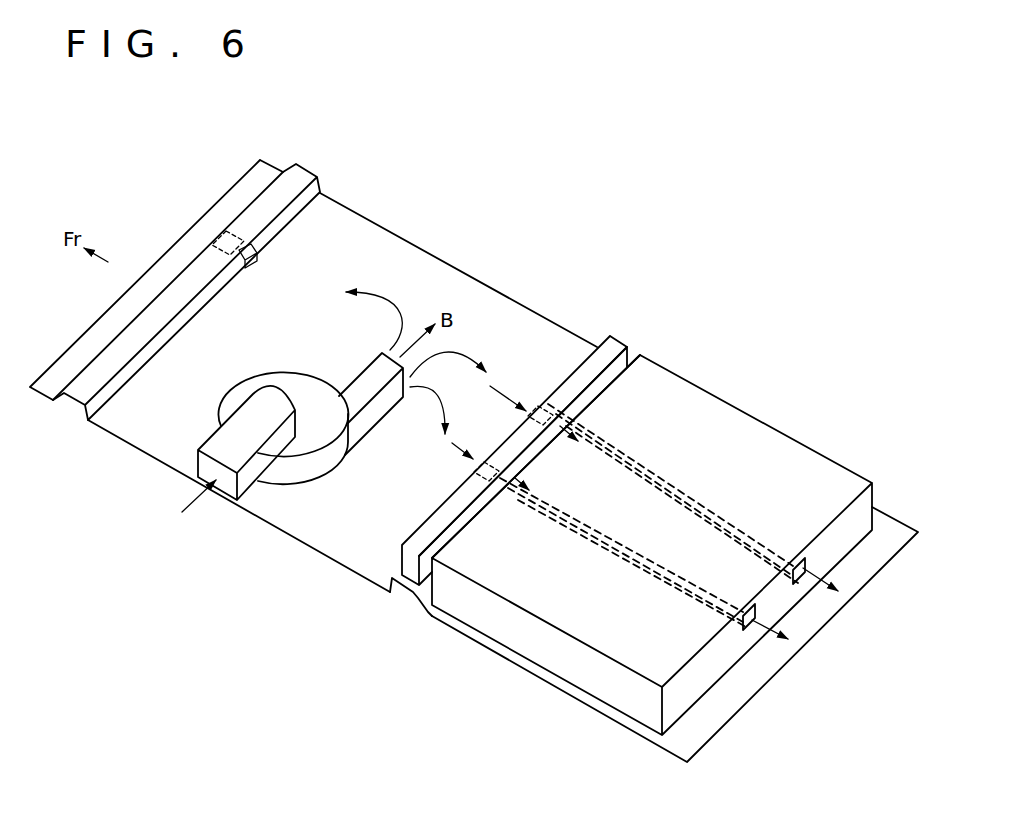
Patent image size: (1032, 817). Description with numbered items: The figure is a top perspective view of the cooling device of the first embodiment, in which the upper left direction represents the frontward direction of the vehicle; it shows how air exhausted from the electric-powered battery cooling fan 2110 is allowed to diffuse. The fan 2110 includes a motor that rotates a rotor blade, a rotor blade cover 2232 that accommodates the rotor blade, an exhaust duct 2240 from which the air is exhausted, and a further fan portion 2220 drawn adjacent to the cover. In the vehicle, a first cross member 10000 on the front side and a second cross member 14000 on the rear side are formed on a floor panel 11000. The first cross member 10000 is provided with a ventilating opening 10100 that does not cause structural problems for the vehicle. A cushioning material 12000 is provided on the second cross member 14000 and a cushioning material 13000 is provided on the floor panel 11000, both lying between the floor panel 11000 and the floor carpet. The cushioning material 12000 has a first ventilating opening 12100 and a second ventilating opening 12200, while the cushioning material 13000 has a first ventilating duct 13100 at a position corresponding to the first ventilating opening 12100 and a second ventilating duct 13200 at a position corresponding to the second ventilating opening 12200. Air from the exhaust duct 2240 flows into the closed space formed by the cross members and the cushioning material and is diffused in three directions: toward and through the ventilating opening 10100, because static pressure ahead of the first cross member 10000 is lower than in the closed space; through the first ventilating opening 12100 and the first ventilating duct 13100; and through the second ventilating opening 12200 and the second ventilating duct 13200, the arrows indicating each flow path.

The first cross member 10000 is at (301, 172).
The ventilating opening 10100 is at (227, 231).
The floor panel 11000 is at (423, 268).
The cushioning material 12000 is at (617, 349).
The first ventilating opening 12100 is at (547, 407).
The second ventilating opening 12200 is at (500, 492).
The cushioning material 13000 is at (720, 409).
The first ventilating duct 13100 is at (718, 511).
The second ventilating duct 13200 is at (627, 565).
The second cross member 14000 is at (393, 596).
The electric-powered battery cooling fan 2110 is at (278, 367).
The first cable portion 2220 is at (244, 487).
The rotor blade cover 2232 is at (318, 463).
The exhaust duct 2240 is at (370, 420).